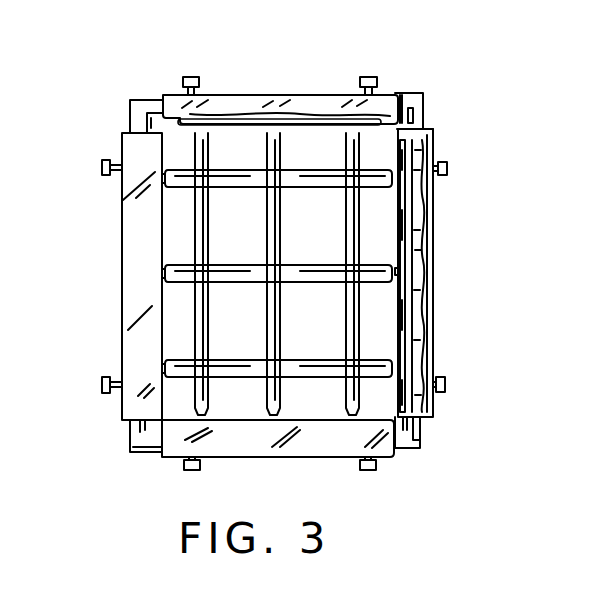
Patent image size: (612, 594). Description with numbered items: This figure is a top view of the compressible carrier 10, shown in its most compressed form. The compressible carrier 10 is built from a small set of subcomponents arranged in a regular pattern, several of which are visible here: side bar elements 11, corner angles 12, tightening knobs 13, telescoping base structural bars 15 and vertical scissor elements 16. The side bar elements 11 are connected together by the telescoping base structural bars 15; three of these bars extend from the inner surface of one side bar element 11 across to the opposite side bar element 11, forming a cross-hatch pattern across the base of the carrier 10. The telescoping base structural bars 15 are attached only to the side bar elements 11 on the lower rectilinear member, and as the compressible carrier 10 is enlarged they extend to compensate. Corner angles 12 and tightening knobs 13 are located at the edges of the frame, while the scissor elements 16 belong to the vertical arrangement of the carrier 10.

The compressible carrier 10 is at (276, 21).
The side bar element 11 is at (433, 248).
The corner angle 12 is at (424, 94).
The tightening knob 13 is at (448, 168).
The telescoping base structural bar 15 is at (392, 359).
The vertical scissor element 16 is at (430, 300).